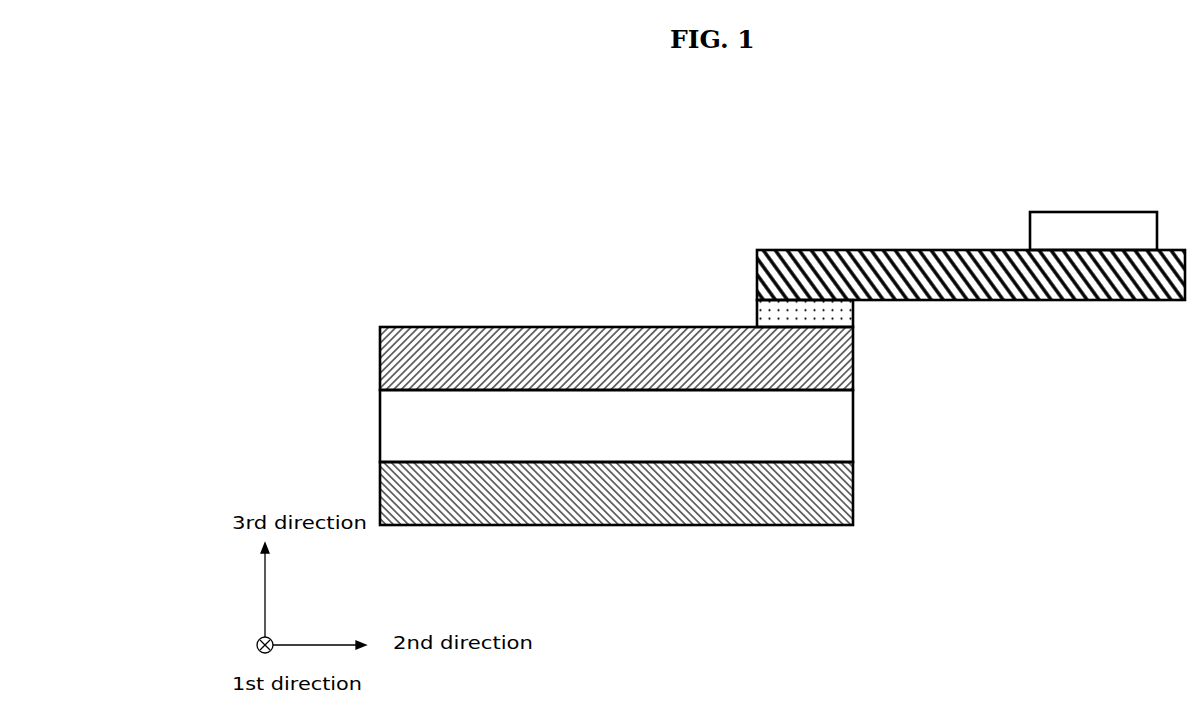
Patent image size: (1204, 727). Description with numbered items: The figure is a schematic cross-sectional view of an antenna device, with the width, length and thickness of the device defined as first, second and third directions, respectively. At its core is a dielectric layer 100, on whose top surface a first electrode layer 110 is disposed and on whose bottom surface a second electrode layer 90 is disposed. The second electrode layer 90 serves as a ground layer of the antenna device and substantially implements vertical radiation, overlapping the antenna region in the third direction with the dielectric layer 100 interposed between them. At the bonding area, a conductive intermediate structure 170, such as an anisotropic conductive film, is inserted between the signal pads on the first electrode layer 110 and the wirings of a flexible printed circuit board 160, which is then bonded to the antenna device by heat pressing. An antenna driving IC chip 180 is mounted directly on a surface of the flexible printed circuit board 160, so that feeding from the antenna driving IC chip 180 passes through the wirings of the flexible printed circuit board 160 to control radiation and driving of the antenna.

The second electrode layer 90 is at (843, 500).
The dielectric layer 100 is at (838, 431).
The first electrode layer 110 is at (843, 366).
The flexible printed circuit board 160 is at (921, 262).
The conductive intermediate structure 170 is at (793, 312).
The antenna driving IC chip 180 is at (1100, 215).